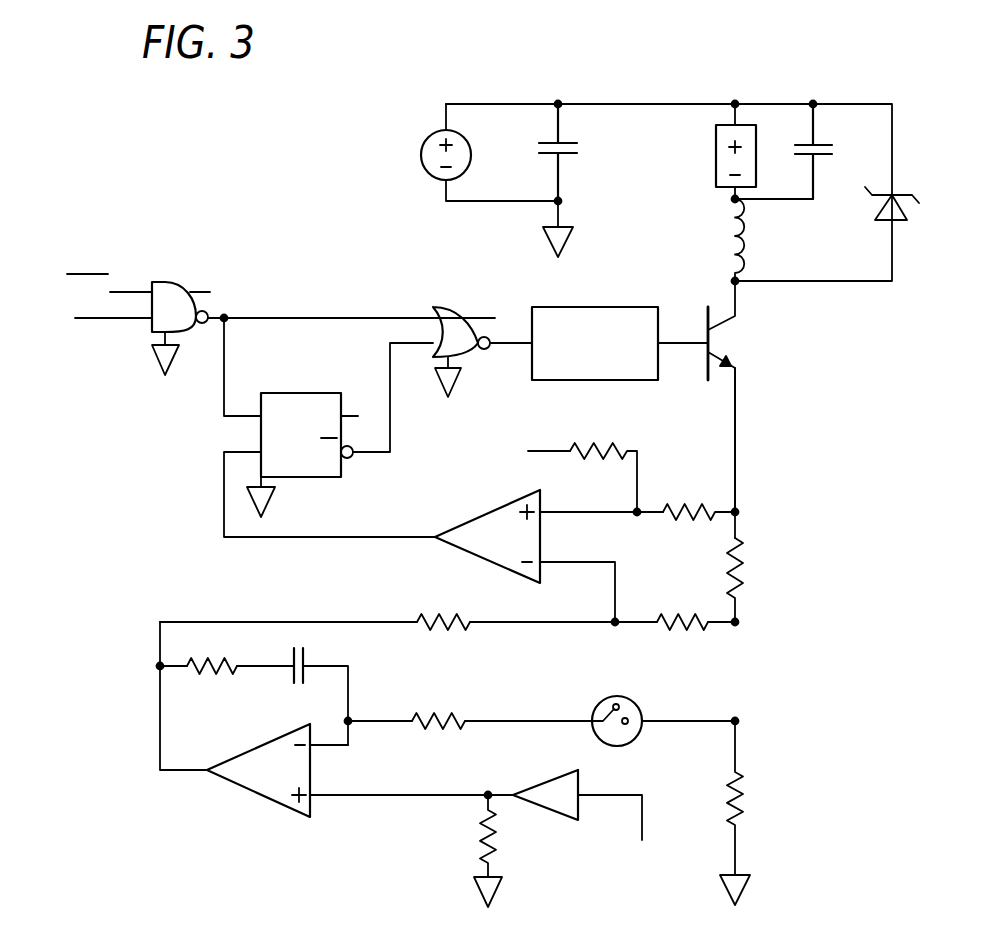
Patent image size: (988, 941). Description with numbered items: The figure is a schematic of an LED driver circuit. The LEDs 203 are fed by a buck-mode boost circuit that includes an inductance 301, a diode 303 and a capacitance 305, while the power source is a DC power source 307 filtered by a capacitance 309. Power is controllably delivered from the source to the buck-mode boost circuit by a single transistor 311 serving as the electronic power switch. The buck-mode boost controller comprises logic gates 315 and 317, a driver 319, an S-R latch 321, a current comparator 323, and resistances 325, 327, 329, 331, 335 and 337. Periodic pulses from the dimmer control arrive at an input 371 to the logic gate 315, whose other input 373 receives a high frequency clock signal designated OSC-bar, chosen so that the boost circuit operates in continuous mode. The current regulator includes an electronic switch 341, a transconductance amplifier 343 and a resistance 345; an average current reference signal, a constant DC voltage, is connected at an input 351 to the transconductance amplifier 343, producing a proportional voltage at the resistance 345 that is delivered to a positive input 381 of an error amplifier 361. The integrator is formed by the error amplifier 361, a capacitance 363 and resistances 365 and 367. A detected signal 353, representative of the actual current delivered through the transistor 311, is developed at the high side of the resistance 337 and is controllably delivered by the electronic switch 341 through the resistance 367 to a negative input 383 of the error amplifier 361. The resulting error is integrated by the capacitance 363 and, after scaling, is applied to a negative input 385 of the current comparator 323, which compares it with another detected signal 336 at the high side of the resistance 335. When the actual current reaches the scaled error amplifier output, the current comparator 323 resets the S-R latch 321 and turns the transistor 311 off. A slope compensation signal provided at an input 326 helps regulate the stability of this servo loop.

The LEDs 203 is at (716, 160).
The inductance 301 is at (745, 236).
The diode 303 is at (882, 221).
The capacitance 305 is at (818, 145).
The DC power source 307 is at (425, 141).
The capacitance 309 is at (552, 143).
The transistor 311 is at (714, 328).
The logic gate 315 is at (160, 282).
The logic gate 317 is at (443, 306).
The driver 319 is at (597, 307).
The S-R latch 321 is at (292, 393).
The current comparator 323 is at (488, 513).
The resistance 325 is at (605, 451).
The input 326 is at (566, 451).
The resistance 327 is at (694, 507).
The resistance 329 is at (678, 640).
The resistance 331 is at (432, 615).
The resistance 335 is at (742, 553).
The detected signal 336 is at (735, 465).
The resistance 337 is at (747, 785).
The electronic switch 341 is at (617, 696).
The transconductance amplifier 343 is at (566, 775).
The resistance 345 is at (478, 835).
The input 351 is at (648, 820).
The detected signal 353 is at (673, 721).
The error amplifier 361 is at (266, 744).
The capacitance 363 is at (308, 664).
The resistance 365 is at (217, 662).
The resistance 367 is at (445, 715).
The input 371 is at (125, 322).
The input 373 is at (130, 292).
The positive input 381 is at (338, 797).
The negative input 383 is at (330, 746).
The negative input 385 is at (575, 562).